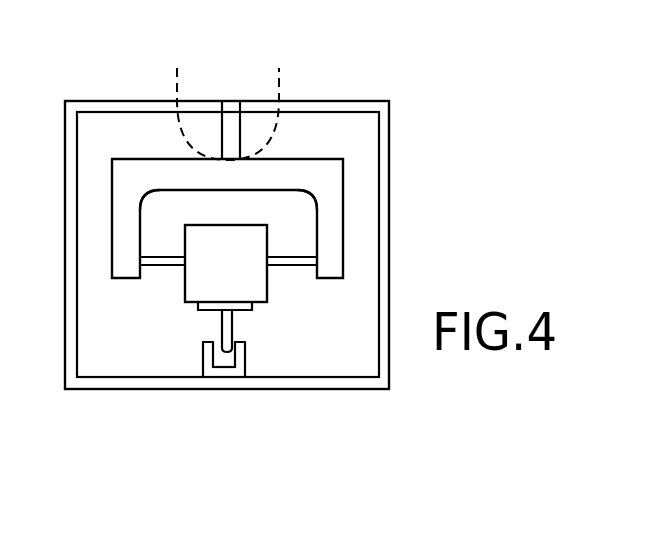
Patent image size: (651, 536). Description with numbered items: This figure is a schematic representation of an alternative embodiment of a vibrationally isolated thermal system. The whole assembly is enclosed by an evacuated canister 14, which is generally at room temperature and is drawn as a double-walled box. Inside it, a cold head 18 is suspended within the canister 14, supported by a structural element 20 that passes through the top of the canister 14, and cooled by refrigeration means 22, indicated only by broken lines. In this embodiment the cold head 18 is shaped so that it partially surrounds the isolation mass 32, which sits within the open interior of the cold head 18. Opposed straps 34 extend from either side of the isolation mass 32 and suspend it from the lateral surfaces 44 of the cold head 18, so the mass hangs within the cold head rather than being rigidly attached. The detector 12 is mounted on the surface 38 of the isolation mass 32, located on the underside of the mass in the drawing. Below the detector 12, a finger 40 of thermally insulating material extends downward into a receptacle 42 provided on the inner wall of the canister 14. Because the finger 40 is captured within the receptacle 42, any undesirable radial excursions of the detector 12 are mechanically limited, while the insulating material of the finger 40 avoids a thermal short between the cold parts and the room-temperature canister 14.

The detector 12 is at (250, 307).
The canister 14 is at (391, 143).
The cold head 18 is at (330, 208).
The structural element 20 is at (241, 123).
The refrigeration means 22 is at (280, 74).
The isolation mass 32 is at (252, 290).
The opposed straps 34 is at (163, 267).
The surface 38 is at (188, 310).
The finger 40 is at (232, 336).
The receptacle 42 is at (225, 357).
The lateral surfaces 44 is at (145, 238).